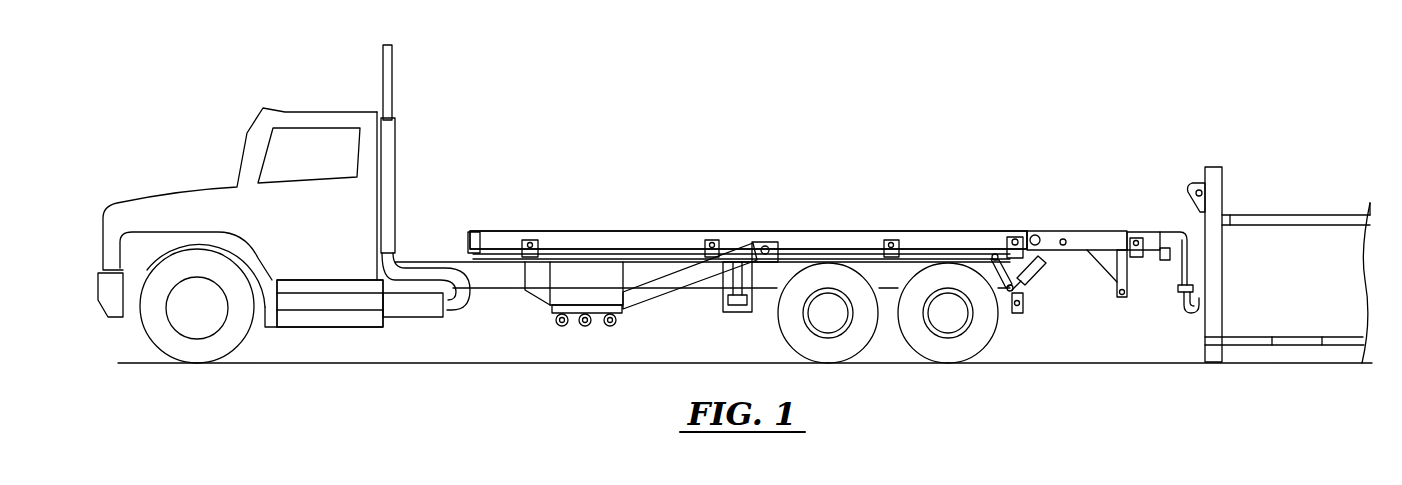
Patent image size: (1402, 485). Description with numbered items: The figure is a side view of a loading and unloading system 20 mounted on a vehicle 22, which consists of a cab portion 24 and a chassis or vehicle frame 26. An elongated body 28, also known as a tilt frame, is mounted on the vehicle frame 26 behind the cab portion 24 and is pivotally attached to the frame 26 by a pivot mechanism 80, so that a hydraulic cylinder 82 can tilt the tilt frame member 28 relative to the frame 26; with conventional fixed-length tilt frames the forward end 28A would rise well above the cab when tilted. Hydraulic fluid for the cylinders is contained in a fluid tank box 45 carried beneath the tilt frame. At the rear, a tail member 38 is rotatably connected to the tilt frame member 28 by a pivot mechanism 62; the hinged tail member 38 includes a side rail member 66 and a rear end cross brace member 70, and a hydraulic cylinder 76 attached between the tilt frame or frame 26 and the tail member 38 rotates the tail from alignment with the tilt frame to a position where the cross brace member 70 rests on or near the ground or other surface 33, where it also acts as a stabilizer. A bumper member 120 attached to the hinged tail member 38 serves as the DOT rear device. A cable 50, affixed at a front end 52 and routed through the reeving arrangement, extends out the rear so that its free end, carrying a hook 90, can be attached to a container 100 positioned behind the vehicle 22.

The loading and unloading system 20 is at (1033, 100).
The vehicle 22 is at (158, 128).
The cab portion 24 is at (325, 262).
The vehicle frame 26 is at (708, 285).
The elongated body 28 is at (625, 245).
The forward end of the tilt frame member 28A is at (478, 232).
The ground or other surface 33 is at (505, 365).
The tail member 38 is at (1080, 250).
The fluid tank box 45 is at (567, 282).
The cable 50 is at (1188, 260).
The front end 52 is at (1213, 198).
The pivot mechanism 62 is at (1030, 236).
The side rail member 66 is at (1108, 238).
The rear end cross brace member 70 is at (1165, 252).
The hydraulic cylinder 76 is at (1030, 275).
The pivot mechanism 80 is at (1000, 256).
The hydraulic cylinder 82 is at (648, 292).
The hook 90 is at (1193, 295).
The container 100 is at (1350, 283).
The bumper member 120 is at (1122, 298).